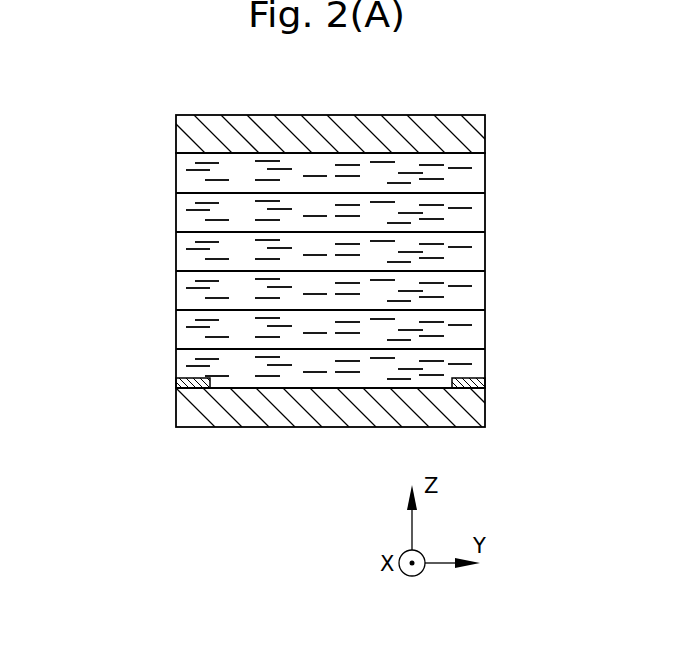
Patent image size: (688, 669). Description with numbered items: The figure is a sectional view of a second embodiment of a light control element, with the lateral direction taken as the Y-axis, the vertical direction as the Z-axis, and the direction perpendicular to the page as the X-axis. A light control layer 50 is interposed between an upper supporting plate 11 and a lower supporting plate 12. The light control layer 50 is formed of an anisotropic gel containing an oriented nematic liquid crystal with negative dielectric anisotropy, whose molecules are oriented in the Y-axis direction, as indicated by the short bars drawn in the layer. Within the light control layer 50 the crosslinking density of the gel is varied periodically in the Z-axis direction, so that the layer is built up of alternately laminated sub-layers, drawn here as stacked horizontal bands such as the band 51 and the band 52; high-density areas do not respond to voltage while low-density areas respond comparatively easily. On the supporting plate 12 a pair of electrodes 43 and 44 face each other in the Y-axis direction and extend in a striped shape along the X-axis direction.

The supporting plate 11 is at (177, 142).
The supporting plate 12 is at (177, 412).
The light control layer 50 is at (302, 271).
The display layer 51 is at (475, 255).
The partition / layer boundary 52 is at (475, 295).
The electrode 43 is at (177, 385).
The electrode 44 is at (487, 380).